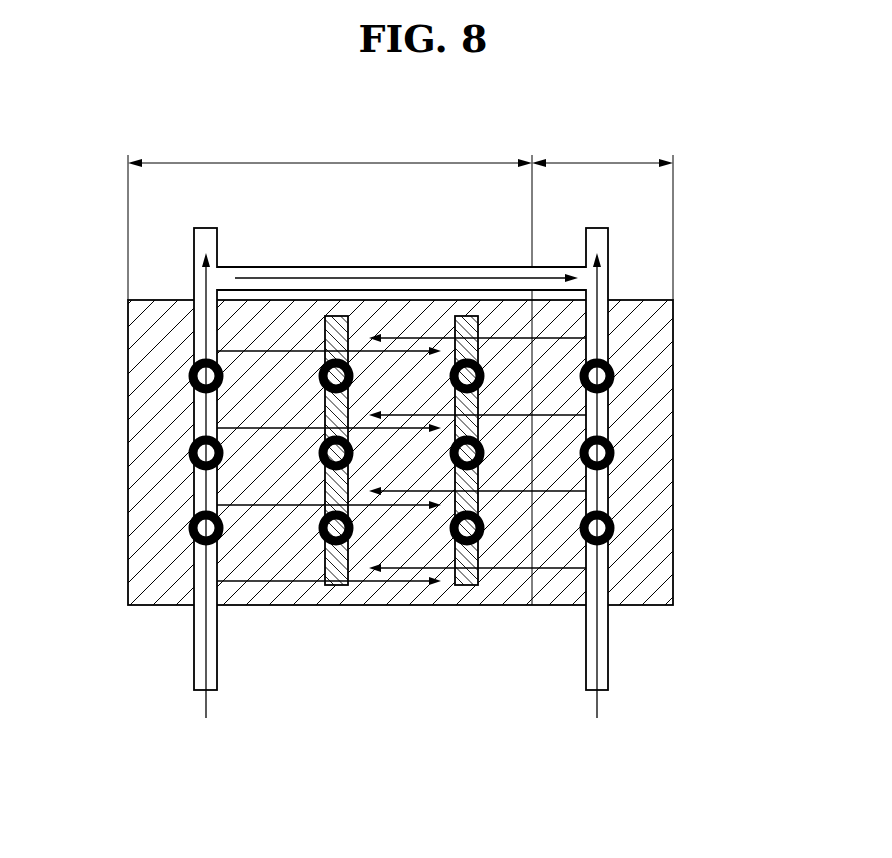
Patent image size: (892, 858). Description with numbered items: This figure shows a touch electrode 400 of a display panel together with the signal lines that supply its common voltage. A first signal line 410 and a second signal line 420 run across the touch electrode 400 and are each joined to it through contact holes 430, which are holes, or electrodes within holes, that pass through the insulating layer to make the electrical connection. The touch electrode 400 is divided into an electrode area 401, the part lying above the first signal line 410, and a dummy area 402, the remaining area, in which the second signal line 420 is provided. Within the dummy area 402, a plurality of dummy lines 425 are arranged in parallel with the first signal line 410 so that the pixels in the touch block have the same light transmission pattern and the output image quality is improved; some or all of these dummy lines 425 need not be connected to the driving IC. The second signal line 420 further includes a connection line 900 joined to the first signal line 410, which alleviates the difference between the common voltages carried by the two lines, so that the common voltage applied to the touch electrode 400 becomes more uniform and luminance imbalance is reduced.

The touch electrode 400 is at (650, 350).
The electrode area 401 is at (602, 213).
The dummy area 402 is at (330, 366).
The first signal line 410 is at (600, 634).
The second signal line 420 is at (200, 652).
The dummy line 425 is at (333, 587).
The contact hole 430 is at (614, 528).
The connection line 900 is at (400, 266).